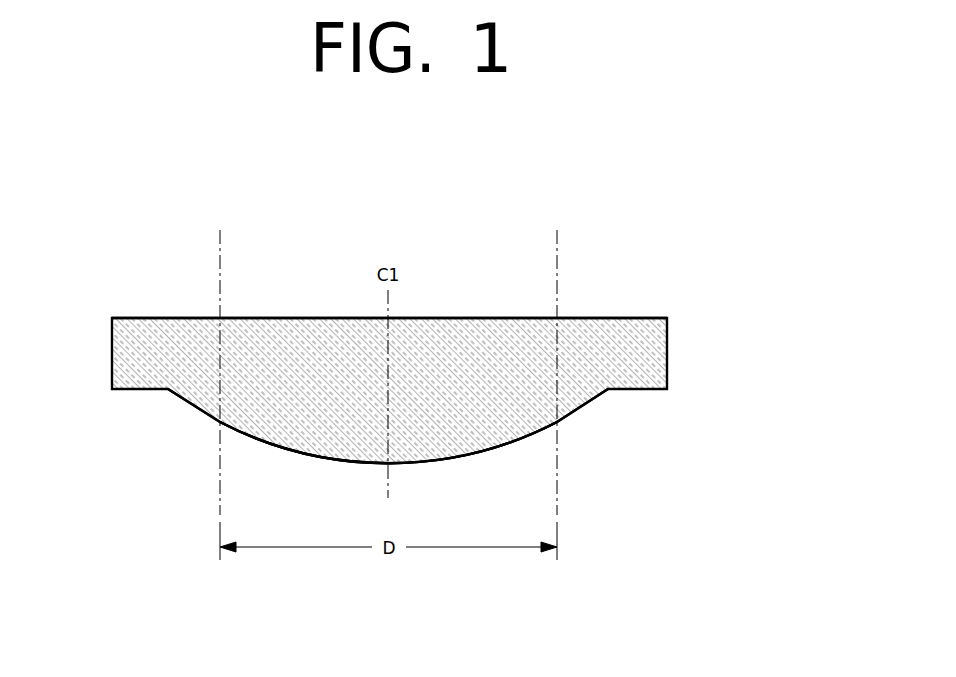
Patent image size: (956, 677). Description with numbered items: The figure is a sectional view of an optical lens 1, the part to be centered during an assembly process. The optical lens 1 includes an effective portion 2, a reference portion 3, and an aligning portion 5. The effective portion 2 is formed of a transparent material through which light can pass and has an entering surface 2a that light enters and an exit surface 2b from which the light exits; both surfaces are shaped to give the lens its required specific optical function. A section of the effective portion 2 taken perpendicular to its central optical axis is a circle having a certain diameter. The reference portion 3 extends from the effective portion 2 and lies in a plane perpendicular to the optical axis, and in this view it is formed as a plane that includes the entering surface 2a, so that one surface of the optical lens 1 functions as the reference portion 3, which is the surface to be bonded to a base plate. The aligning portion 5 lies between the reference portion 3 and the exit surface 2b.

The optical lens 1 is at (366, 170).
The effective portion 2 is at (555, 427).
The entering surface 2a is at (457, 318).
The exit surface 2b is at (481, 452).
The reference portion 3 is at (152, 318).
The aligning portion 5 is at (218, 428).